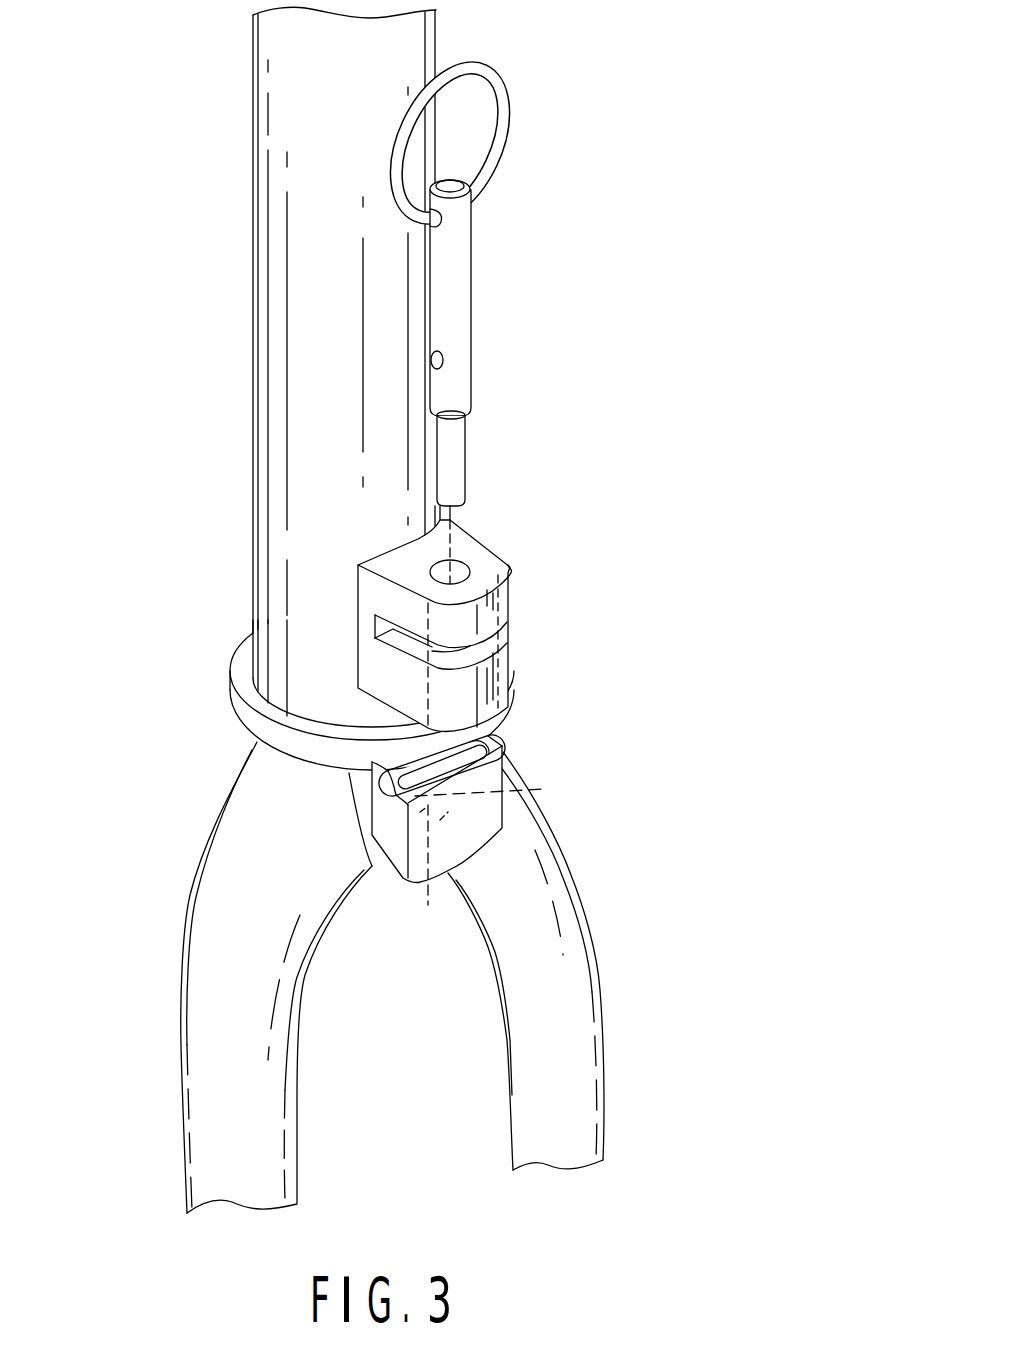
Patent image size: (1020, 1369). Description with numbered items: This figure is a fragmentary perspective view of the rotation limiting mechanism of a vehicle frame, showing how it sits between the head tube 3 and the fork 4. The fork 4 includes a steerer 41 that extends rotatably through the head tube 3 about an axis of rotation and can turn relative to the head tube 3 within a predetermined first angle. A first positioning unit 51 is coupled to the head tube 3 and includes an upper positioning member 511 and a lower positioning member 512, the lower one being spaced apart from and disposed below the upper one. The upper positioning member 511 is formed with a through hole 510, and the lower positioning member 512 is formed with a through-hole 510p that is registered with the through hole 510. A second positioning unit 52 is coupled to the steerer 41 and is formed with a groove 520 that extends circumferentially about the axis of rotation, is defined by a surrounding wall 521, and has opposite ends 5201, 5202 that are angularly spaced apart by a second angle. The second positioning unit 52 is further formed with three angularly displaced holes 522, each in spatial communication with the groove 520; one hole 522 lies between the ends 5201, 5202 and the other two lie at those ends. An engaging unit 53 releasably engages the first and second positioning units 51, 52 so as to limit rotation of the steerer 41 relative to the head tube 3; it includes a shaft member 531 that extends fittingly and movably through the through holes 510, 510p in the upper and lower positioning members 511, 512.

The head tube 3 is at (288, 183).
The fork 4 is at (459, 977).
The steerer 41 is at (354, 872).
The first positioning unit 51 is at (532, 606).
The through hole 510 is at (458, 568).
The through-hole 510p is at (499, 653).
The upper positioning member 511 is at (496, 605).
The lower positioning member 512 is at (499, 678).
The second positioning unit 52 is at (409, 824).
The groove 520 is at (497, 745).
The first end of the groove 5201 is at (380, 768).
The second end of the groove 5202 is at (485, 735).
The surrounding wall 521 is at (506, 762).
The hole 522 is at (503, 822).
The engaging unit 53 is at (496, 281).
The shaft member 531 is at (457, 268).